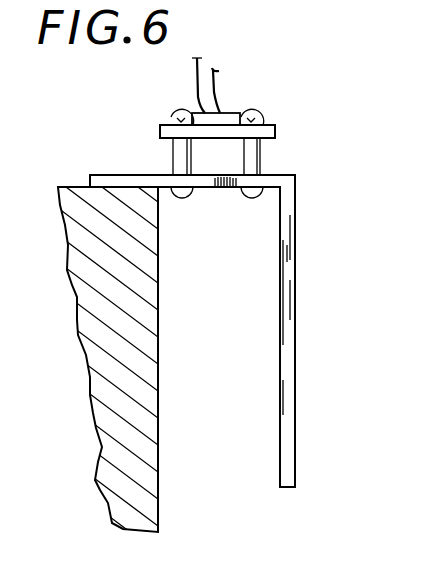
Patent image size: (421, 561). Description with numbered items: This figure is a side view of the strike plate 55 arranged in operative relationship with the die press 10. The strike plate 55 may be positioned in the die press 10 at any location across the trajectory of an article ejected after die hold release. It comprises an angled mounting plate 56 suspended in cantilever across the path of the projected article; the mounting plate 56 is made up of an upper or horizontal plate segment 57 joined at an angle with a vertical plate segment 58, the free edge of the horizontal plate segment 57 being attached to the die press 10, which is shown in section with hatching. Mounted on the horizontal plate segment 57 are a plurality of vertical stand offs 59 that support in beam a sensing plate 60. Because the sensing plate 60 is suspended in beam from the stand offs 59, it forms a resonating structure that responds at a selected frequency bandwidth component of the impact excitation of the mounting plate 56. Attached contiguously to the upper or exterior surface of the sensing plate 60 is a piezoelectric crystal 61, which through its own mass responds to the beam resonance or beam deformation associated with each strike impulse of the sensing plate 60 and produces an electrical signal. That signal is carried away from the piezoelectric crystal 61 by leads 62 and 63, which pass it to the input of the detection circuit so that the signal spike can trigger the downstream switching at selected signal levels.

The die press 10 is at (62, 187).
The strike plate 55 is at (297, 195).
The angled mounting plate 56 is at (281, 421).
The horizontal plate segment 57 is at (281, 322).
The vertical plate segment 58 is at (214, 181).
The vertical stand offs 59 is at (256, 158).
The sensing plate 60 is at (274, 131).
The piezoelectric crystal 61 is at (202, 109).
The lead 62 is at (221, 71).
The lead 63 is at (195, 74).